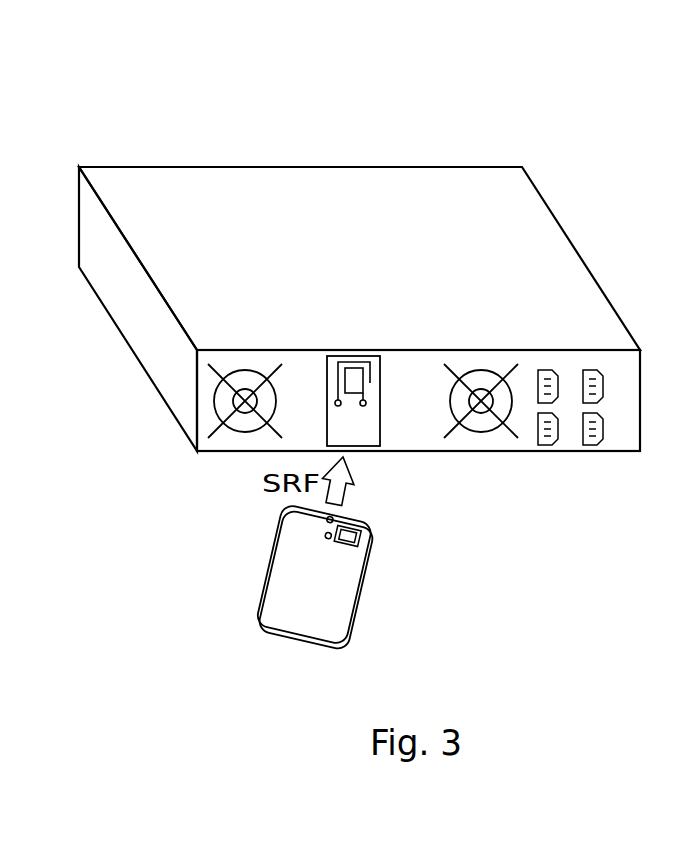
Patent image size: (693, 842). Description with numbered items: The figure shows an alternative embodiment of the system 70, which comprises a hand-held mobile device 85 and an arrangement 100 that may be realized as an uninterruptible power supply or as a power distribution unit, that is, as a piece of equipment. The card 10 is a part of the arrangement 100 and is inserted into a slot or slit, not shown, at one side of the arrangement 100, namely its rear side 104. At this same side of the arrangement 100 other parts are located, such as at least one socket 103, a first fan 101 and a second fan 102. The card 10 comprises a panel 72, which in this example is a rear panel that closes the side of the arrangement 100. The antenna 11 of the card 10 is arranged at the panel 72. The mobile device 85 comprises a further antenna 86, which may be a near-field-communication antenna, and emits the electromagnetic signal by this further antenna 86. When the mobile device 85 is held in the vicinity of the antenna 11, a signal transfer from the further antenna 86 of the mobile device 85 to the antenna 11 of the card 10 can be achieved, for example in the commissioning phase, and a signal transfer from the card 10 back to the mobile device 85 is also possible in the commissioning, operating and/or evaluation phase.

The system 70 is at (558, 107).
The arrangement 100 is at (590, 452).
The first fan 101 is at (245, 368).
The second fan 102 is at (484, 370).
The socket 103 is at (557, 372).
The rear side 104 is at (205, 446).
The card 10 is at (327, 373).
The antenna 11 is at (370, 380).
The panel 72 is at (372, 428).
The mobile device 85 is at (347, 590).
The further antenna 86 is at (362, 536).